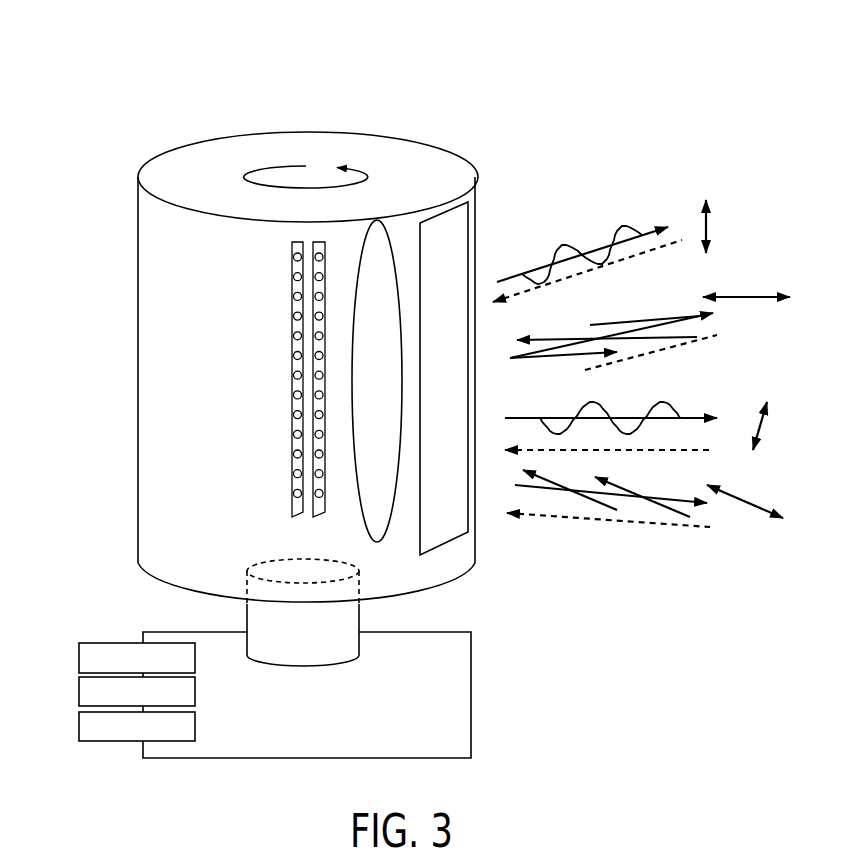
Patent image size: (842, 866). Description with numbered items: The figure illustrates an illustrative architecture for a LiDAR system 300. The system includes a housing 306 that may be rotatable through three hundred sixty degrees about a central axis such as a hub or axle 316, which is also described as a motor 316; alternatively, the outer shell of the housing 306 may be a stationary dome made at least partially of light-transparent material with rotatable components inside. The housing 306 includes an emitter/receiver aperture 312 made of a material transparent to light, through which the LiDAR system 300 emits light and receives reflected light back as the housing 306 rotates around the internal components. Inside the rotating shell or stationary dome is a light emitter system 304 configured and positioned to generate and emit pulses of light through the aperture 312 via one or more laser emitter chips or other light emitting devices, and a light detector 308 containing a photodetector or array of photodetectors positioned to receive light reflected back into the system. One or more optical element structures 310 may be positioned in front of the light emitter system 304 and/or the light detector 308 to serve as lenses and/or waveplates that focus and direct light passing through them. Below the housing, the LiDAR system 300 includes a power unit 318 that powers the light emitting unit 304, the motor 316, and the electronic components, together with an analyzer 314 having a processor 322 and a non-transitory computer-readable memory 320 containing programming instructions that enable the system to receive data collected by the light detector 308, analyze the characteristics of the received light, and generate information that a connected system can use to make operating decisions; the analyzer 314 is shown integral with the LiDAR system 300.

The LiDAR system 300 is at (214, 98).
The light emitter system 304 is at (318, 243).
The housing 306 is at (138, 226).
The light detector 308 is at (292, 250).
The optical element structure 310 is at (383, 219).
The emitter/receiver aperture 312 is at (453, 197).
The analyzer 314 is at (471, 693).
The hub or axle 316 is at (313, 653).
The power unit 318 is at (92, 660).
The non-transitory computer-readable memory 320 is at (92, 696).
The processor 322 is at (92, 730).